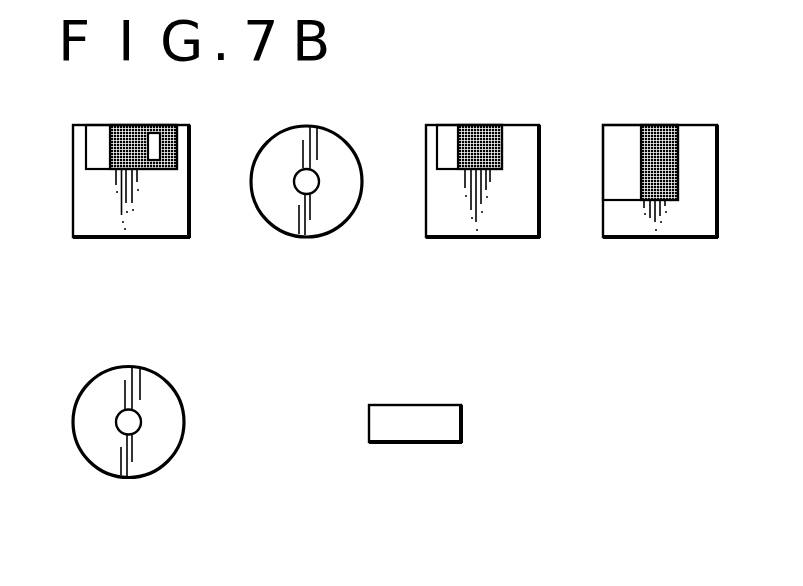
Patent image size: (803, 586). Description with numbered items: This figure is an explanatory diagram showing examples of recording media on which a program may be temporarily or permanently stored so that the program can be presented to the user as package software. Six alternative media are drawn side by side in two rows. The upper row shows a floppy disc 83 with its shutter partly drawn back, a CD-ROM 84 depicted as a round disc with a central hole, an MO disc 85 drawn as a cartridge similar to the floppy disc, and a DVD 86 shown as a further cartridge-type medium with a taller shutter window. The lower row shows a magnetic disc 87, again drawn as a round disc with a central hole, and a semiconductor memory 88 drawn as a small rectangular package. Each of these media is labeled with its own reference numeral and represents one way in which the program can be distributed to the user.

The floppy disc 83 is at (120, 238).
The CD-ROM 84 is at (297, 238).
The MO disc 85 is at (470, 238).
The DVD 86 is at (644, 238).
The magnetic disc 87 is at (118, 478).
The semiconductor memory 88 is at (409, 443).